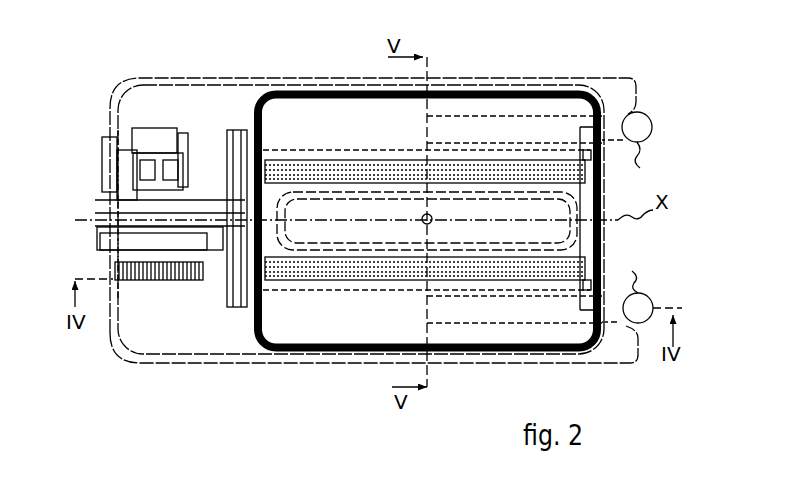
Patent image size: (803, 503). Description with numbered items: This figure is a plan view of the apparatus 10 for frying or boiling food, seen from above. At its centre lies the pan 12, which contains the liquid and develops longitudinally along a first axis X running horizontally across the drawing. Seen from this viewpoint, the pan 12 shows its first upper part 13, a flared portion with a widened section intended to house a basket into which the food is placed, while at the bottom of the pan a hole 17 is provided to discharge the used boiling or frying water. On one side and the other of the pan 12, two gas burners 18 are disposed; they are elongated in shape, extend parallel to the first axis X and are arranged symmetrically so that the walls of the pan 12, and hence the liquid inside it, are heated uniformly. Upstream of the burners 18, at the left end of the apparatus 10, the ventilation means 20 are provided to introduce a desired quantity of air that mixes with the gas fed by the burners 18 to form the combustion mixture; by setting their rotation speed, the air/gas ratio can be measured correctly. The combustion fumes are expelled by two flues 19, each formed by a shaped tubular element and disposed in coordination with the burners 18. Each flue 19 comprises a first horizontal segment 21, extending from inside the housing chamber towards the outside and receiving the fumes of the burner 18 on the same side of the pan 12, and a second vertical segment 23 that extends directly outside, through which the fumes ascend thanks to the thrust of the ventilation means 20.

The apparatus 10 is at (558, 58).
The pan 12 is at (198, 364).
The first upper part 13 is at (223, 340).
The hole 17 is at (422, 217).
The gas burners 18 is at (336, 160).
The flues 19 is at (651, 115).
The ventilation means 20 is at (150, 120).
The first horizontal segment 21 is at (490, 115).
The second vertical segment 23 is at (634, 217).